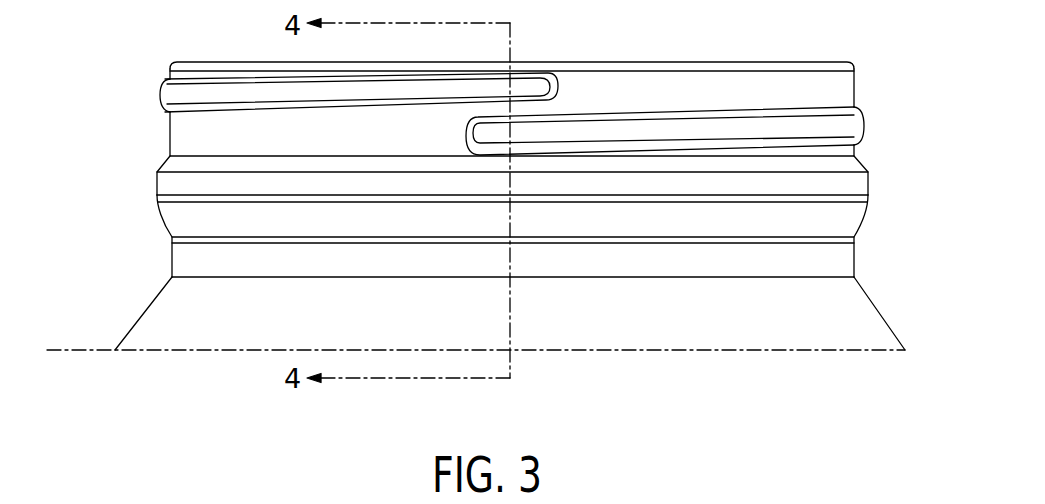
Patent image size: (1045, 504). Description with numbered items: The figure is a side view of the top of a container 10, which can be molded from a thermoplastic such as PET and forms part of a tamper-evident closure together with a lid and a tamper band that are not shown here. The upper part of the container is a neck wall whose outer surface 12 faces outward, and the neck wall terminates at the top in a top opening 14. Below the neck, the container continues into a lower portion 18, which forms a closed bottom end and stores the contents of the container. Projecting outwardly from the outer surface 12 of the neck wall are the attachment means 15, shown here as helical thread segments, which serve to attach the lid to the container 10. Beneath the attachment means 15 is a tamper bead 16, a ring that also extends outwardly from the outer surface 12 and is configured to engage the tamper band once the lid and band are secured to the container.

The container 10 is at (872, 300).
The outer surface 12 is at (168, 140).
The top opening 14 is at (748, 61).
The attachment means 15 is at (161, 97).
The tamper bead 16 is at (155, 190).
The lower portion 18 is at (140, 316).